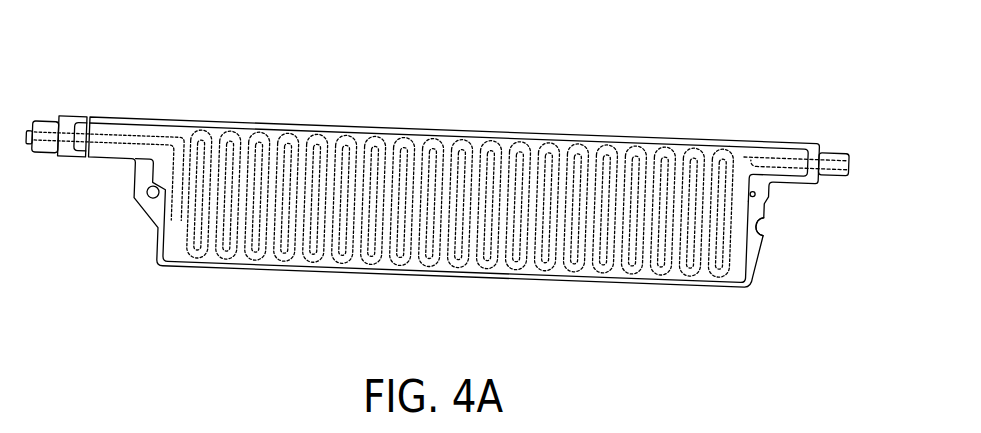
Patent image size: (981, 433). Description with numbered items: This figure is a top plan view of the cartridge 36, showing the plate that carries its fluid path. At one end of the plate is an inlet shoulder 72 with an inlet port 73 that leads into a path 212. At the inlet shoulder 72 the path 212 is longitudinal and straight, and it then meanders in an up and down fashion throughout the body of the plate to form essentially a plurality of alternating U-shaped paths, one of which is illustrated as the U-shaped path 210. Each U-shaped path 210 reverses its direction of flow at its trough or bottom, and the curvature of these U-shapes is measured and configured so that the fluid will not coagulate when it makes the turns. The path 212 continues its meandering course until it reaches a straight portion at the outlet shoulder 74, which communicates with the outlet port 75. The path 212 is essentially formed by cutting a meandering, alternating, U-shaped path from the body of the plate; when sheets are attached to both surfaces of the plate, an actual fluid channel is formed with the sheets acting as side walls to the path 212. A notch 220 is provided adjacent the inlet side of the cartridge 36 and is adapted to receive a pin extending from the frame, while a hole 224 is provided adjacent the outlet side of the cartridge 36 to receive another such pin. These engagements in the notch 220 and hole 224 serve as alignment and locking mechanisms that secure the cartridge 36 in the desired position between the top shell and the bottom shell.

The cartridge 36 is at (470, 333).
The inlet shoulder 72 is at (128, 118).
The inlet port 73 is at (50, 124).
The outlet shoulder 74 is at (784, 146).
The outlet port 75 is at (837, 152).
The U-shaped path 210 is at (233, 114).
The path 212 is at (320, 137).
The notch 220 is at (770, 230).
The hole 224 is at (150, 194).